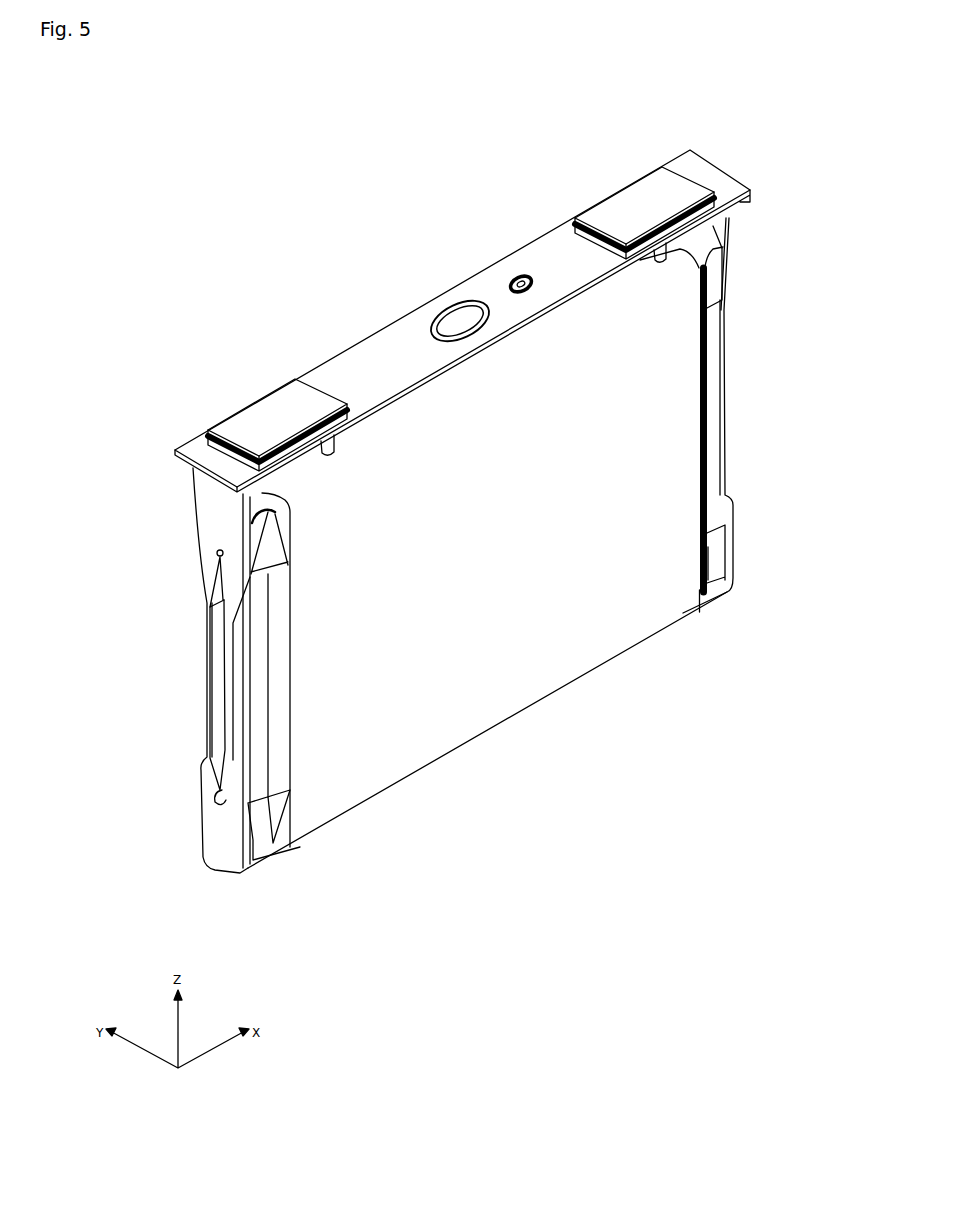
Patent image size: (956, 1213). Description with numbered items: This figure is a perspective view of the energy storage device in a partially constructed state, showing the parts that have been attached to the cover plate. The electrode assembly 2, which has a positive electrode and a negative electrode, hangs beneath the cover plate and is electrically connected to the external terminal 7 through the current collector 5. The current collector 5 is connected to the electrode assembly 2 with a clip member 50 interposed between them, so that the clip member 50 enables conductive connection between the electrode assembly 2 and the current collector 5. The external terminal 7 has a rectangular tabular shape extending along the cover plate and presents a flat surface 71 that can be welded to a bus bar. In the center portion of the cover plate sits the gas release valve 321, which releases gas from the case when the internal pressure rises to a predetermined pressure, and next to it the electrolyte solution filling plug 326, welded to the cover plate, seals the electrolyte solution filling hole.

The electrode assembly 2 is at (527, 709).
The current collector 5 is at (197, 513).
The external terminal 7 is at (240, 406).
The clip member 50 is at (258, 715).
The surface 71 is at (288, 402).
The gas release valve 321 is at (440, 306).
The electrolyte solution filling plug 326 is at (510, 280).